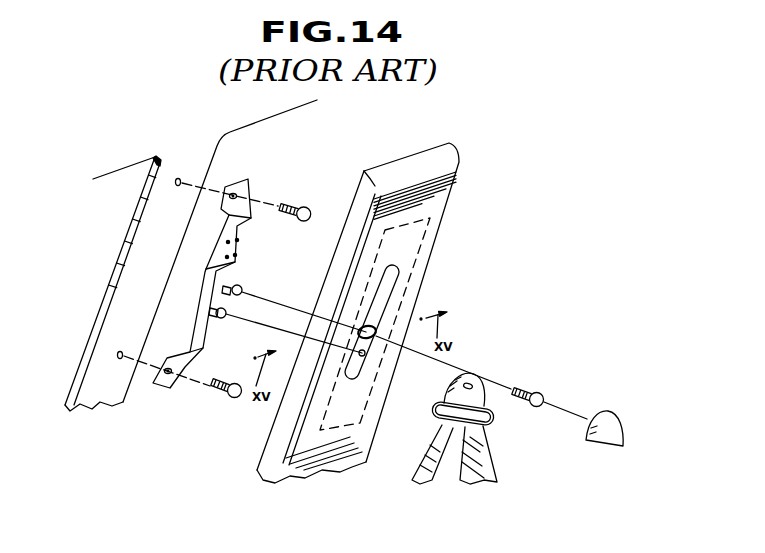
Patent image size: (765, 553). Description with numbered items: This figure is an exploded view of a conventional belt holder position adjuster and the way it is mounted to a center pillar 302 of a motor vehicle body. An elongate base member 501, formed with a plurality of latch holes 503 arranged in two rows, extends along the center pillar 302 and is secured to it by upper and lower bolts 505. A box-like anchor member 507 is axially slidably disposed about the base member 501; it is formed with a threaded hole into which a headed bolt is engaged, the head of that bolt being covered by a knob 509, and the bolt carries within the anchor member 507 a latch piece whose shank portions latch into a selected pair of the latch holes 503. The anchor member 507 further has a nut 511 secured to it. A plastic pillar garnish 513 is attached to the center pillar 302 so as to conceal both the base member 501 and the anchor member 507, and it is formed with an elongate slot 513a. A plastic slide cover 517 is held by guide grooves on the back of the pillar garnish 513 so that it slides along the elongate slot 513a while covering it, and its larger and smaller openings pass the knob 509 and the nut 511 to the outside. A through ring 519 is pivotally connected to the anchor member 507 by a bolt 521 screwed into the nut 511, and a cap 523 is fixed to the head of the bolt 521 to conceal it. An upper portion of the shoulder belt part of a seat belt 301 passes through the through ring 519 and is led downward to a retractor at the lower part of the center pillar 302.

The seat belt 301 is at (495, 462).
The center pillar 302 is at (121, 374).
The elongate base member 501 is at (240, 242).
The latch holes 503 is at (229, 258).
The upper and lower bolts 505 is at (297, 207).
The anchor member 507 is at (190, 296).
The knob 509 is at (244, 289).
The nut 511 is at (223, 319).
The pillar garnish 513 is at (460, 173).
The elongate slot 513a is at (392, 309).
The slide cover 517 is at (398, 289).
The through ring 519 is at (491, 418).
The bolt 521 is at (533, 394).
The cap 523 is at (604, 416).